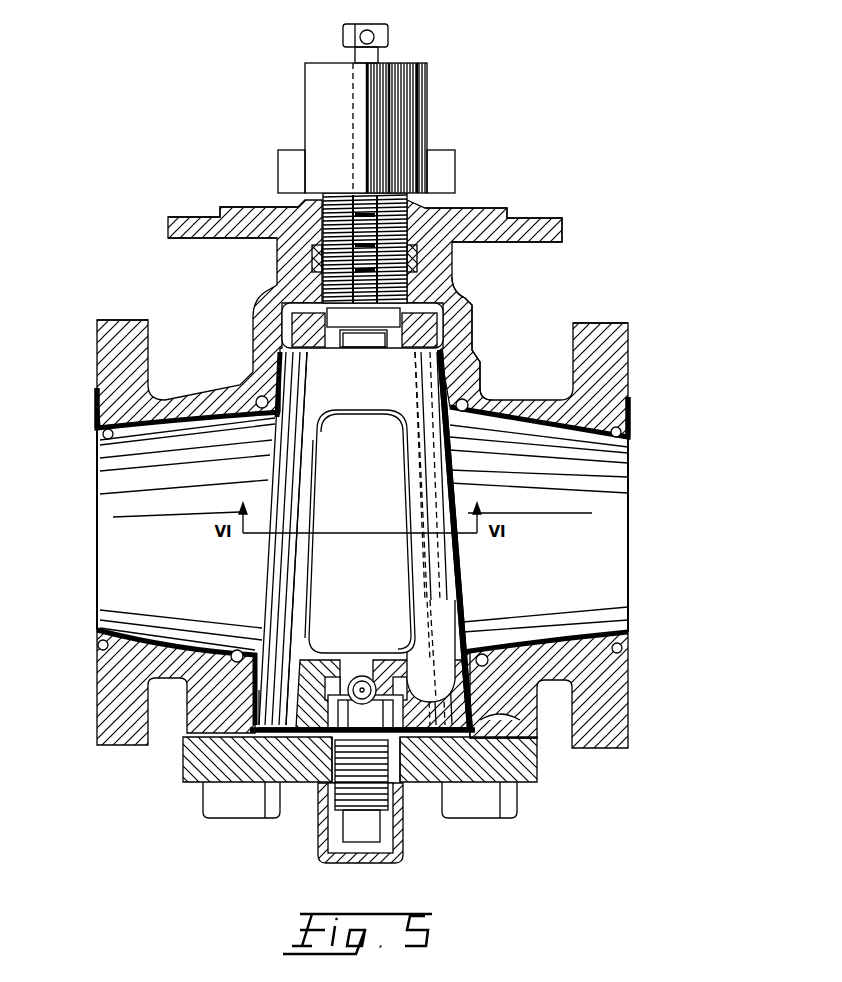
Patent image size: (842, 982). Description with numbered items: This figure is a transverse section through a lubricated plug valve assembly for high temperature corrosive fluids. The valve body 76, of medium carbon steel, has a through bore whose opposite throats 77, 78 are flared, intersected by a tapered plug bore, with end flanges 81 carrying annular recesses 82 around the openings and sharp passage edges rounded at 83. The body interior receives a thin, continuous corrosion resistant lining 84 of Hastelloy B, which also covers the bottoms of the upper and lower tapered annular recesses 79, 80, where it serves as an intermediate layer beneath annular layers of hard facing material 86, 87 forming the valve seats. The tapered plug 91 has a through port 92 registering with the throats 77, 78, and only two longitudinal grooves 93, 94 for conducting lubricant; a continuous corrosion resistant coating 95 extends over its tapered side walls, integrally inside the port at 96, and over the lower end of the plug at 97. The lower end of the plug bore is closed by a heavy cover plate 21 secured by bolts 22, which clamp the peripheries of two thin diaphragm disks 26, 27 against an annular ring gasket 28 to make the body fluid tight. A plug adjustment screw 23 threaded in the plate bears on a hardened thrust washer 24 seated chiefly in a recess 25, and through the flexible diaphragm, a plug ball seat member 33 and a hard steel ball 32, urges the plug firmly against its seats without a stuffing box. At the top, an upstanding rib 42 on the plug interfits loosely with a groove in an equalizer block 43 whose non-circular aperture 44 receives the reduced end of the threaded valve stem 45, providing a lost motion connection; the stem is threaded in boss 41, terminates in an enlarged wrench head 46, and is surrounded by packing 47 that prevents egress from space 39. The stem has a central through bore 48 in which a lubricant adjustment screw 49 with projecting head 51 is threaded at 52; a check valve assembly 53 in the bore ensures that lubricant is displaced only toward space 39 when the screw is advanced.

The cover plate 21 is at (530, 782).
The bolts 22 is at (505, 818).
The plug adjustment screw 23 is at (403, 832).
The thrust washer 24 is at (330, 770).
The recess 25 is at (405, 785).
The diaphragm disk 26 is at (283, 730).
The diaphragm disk 27 is at (262, 708).
The annular ring gasket 28 is at (490, 718).
The ball bearing element 32 is at (362, 675).
The plug ball seat member 33 is at (402, 688).
The space 39 is at (440, 331).
The boss 41 is at (475, 320).
The rib 42 is at (370, 348).
The equalizer block 43 is at (470, 294).
The non-circular aperture 44 is at (335, 348).
The valve stem 45 is at (410, 252).
The enlarged head 46 is at (427, 105).
The packing 47 is at (417, 262).
The through bore 48 is at (385, 85).
The lubricant adjustment screw 49 is at (378, 55).
The projecting head 51 is at (388, 30).
The threaded portion 52 is at (383, 143).
The check valve assembly 53 is at (277, 249).
The valve body 76 is at (508, 395).
The throat 77 is at (185, 428).
The throat 78 is at (552, 433).
The upper tapered annular recess 79 is at (478, 362).
The lower tapered annular recess 80 is at (480, 700).
The end flanges 81 is at (600, 323).
The annular recesses 82 is at (630, 398).
The rounded edges 83 is at (630, 650).
The lining 84 is at (570, 640).
The hard facing layer 86 is at (265, 682).
The hard facing layer 87 is at (285, 393).
The plug 91 is at (463, 625).
The through port 92 is at (312, 600).
The longitudinal groove 93 is at (310, 362).
The longitudinal groove 94 is at (420, 381).
The corrosion resistant coating 95 is at (442, 680).
The port coating 96 is at (358, 462).
The lower end coating 97 is at (405, 750).